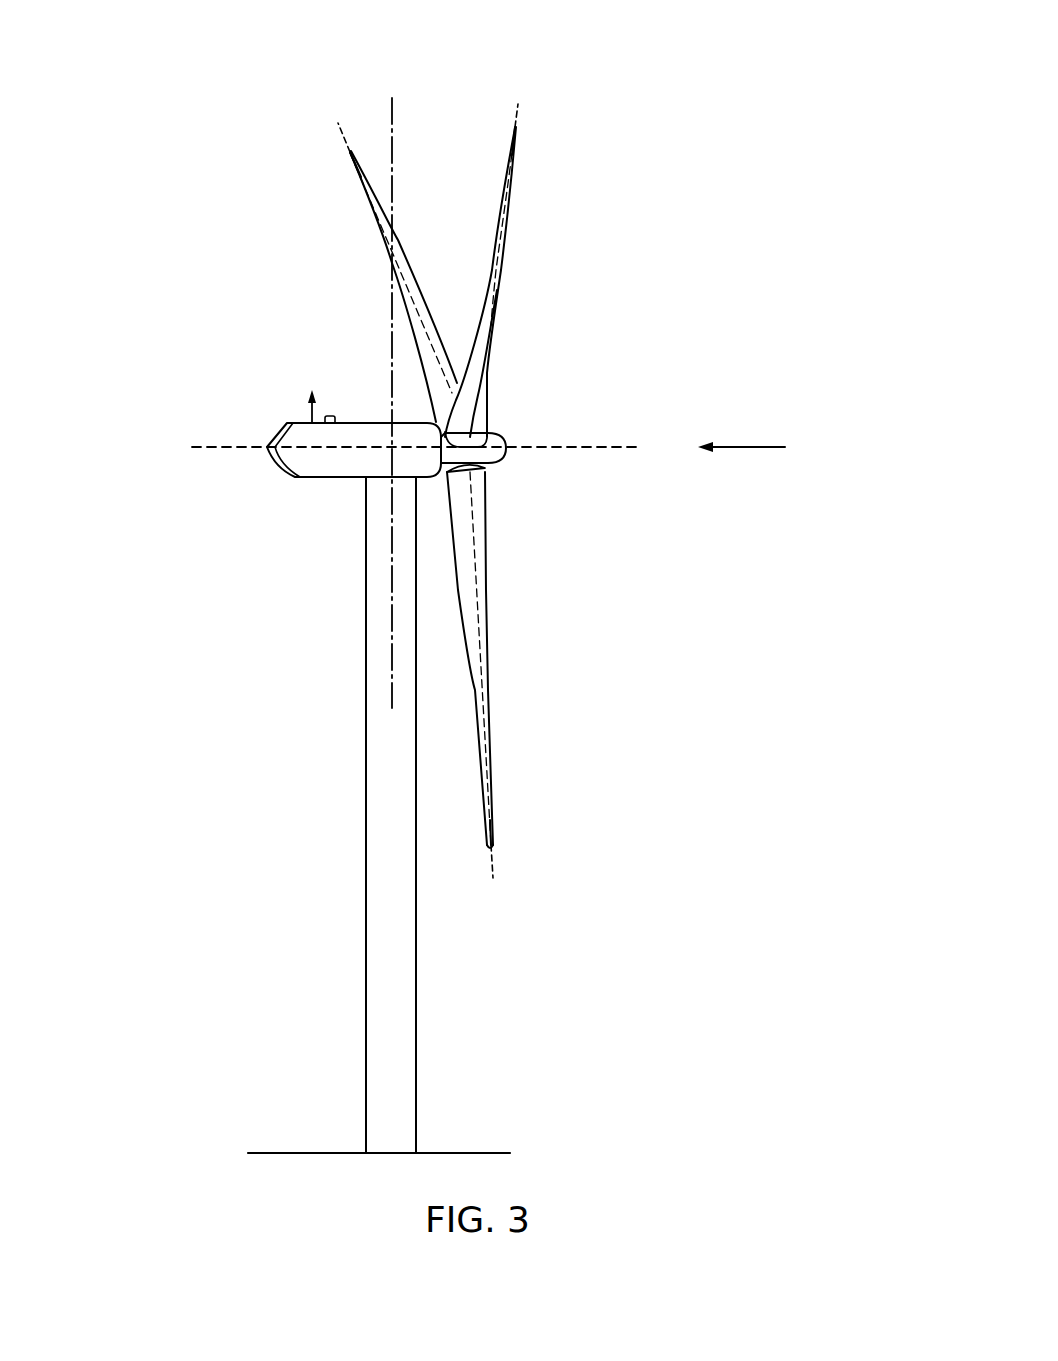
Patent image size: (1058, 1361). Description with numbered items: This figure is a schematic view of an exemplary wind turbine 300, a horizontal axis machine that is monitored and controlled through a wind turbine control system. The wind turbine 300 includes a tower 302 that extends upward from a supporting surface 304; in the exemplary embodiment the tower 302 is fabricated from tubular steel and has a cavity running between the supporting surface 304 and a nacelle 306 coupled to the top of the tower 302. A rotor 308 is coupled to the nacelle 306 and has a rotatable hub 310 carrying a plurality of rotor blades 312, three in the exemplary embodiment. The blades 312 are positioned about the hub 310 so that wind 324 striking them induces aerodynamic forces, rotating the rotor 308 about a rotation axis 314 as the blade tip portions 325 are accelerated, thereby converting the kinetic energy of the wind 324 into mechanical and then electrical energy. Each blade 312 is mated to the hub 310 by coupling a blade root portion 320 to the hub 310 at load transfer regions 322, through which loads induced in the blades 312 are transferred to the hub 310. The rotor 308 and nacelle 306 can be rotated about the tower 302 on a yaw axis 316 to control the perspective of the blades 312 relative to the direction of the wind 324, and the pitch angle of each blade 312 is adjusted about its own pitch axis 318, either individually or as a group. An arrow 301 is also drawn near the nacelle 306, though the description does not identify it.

The wind turbine 300 is at (300, 68).
The yaw axis / upward direction arrow 301 is at (290, 395).
The tower 302 is at (366, 1045).
The supporting surface 304 is at (300, 1152).
The nacelle 306 is at (325, 478).
The rotor 308 is at (533, 280).
The rotatable hub 310 is at (507, 437).
The rotor blades 312 is at (455, 487).
The rotation axis 314 is at (612, 447).
The yaw axis 316 is at (396, 108).
The pitch axis 318 is at (338, 125).
The blade root portion 320 is at (490, 548).
The load transfer regions 322 is at (490, 465).
The wind 324 is at (741, 447).
The blade tip portion 325 is at (356, 170).